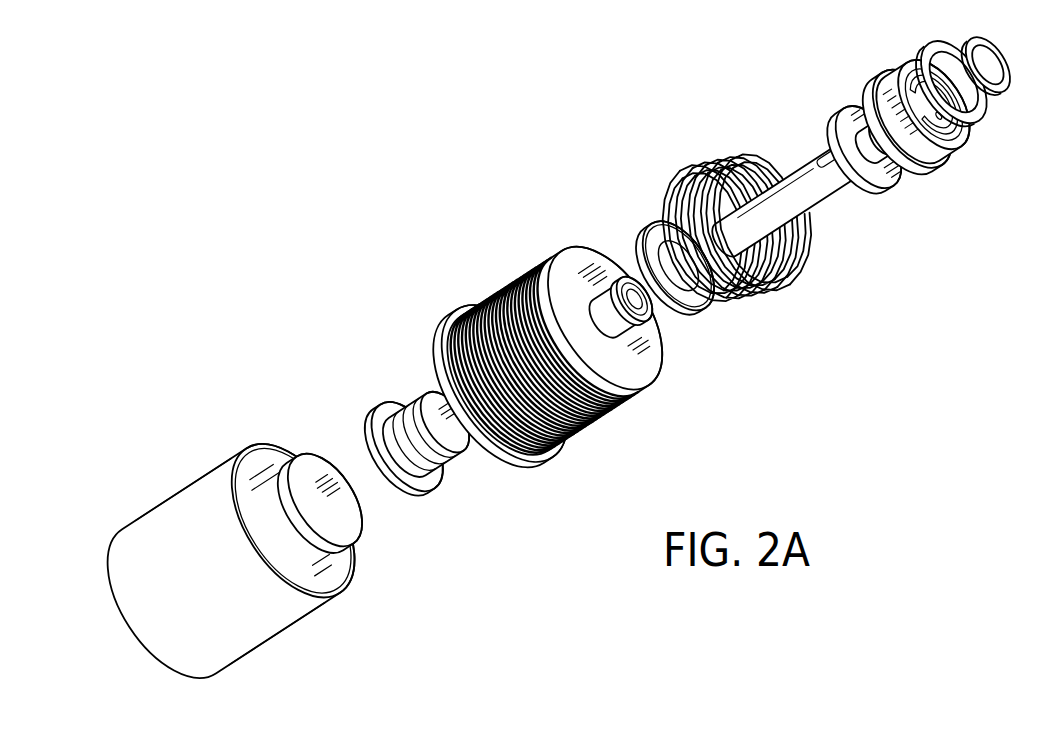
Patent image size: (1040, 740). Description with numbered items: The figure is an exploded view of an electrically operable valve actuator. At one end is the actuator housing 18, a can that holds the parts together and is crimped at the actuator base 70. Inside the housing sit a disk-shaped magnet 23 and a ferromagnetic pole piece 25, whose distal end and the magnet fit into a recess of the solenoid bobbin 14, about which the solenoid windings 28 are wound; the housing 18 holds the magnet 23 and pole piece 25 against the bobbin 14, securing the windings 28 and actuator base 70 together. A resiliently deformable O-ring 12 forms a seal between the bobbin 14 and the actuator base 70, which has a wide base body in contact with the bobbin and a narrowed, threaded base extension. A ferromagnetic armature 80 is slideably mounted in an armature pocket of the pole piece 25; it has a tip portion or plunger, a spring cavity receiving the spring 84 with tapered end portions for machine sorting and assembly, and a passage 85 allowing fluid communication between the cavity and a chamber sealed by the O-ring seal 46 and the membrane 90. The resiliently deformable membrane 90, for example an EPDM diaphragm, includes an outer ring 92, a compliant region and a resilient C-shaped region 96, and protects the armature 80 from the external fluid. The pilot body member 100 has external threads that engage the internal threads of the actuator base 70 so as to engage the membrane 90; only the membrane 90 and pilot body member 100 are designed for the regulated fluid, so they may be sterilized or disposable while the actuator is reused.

The actuator housing 18 is at (153, 505).
The magnet 23 is at (303, 452).
The ferromagnetic pole piece 25 is at (382, 400).
The O-ring seal 46 is at (446, 456).
The solenoid bobbin 14 is at (456, 312).
The solenoid windings 28 is at (504, 286).
The spring 84 is at (618, 282).
The O-ring 12 is at (708, 318).
The actuator base 70 is at (652, 206).
The ferromagnetic armature 80 is at (778, 160).
The passage 85 is at (812, 140).
The outer ring 92 is at (868, 188).
The C-shaped region 96 is at (878, 103).
The pilot body member 100 is at (956, 147).
The resilient membrane 90 is at (924, 135).